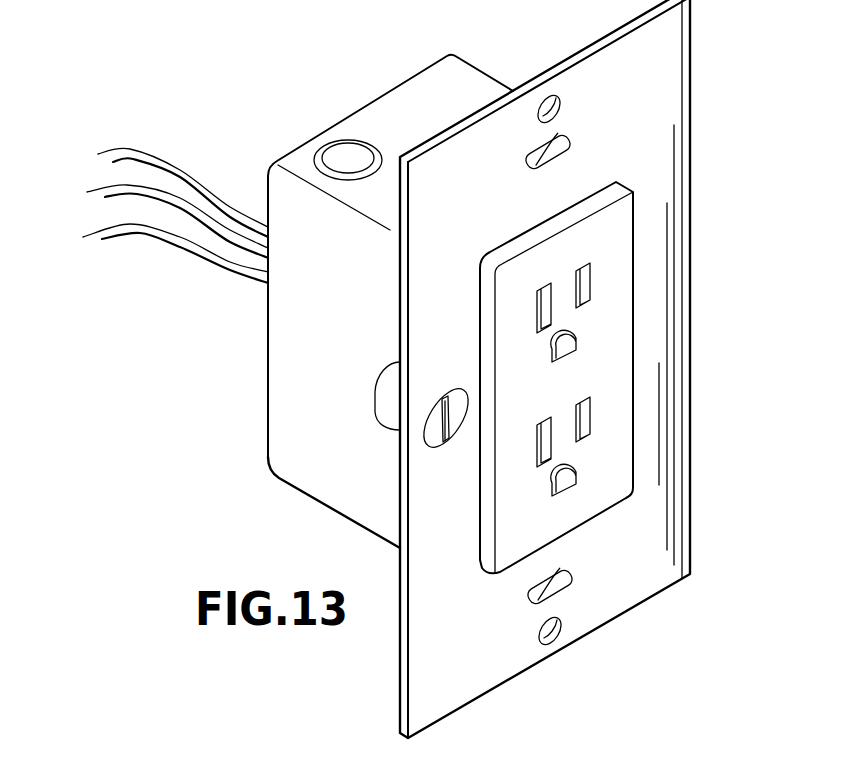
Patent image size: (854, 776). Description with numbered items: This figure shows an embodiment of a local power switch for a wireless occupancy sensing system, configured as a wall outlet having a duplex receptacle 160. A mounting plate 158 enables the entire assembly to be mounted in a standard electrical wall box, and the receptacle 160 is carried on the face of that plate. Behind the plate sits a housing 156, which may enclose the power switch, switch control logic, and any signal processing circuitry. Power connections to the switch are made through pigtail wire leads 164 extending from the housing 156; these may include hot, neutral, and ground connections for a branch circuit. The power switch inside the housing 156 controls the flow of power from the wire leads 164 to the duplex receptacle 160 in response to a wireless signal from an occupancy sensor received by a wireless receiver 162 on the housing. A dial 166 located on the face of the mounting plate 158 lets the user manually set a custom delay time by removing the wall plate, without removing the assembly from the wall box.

The housing 156 is at (266, 354).
The mounting plate 158 is at (692, 284).
The duplex receptacle 160 is at (618, 182).
The wireless receiver 162 is at (348, 141).
The pigtail wire leads 164 is at (160, 156).
The dial 166 is at (452, 388).